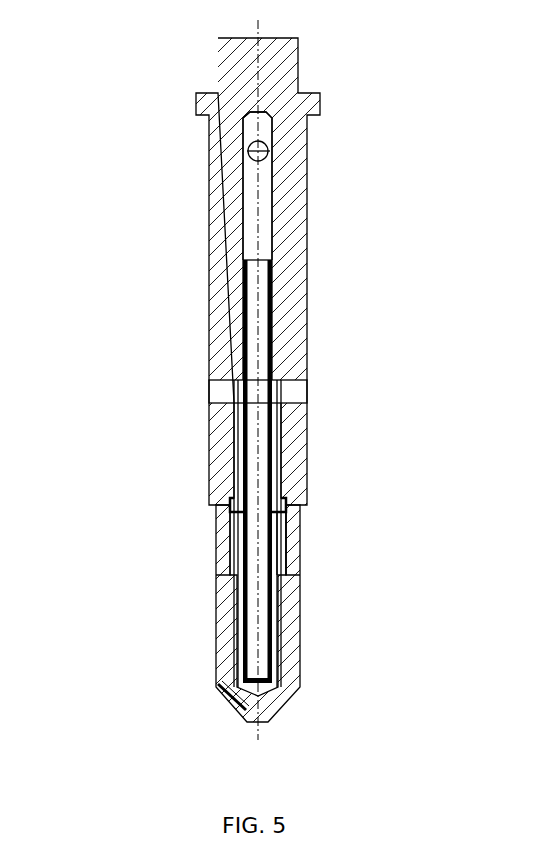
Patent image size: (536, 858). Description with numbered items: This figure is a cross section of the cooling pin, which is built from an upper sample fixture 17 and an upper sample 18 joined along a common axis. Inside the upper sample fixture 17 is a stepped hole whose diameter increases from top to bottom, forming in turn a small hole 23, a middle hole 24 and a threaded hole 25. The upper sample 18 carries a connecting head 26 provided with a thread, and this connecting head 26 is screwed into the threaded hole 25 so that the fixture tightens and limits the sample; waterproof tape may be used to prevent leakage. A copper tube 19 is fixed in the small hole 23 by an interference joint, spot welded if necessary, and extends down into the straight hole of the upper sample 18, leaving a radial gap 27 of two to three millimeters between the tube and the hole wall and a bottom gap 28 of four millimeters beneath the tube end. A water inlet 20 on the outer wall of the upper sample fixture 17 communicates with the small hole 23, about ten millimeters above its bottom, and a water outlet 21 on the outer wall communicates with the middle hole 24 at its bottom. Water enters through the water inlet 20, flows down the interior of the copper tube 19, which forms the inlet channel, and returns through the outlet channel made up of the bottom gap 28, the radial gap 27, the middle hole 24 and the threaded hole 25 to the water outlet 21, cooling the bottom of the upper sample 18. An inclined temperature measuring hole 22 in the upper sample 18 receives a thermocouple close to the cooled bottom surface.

The upper sample fixture 17 is at (268, 400).
The upper sample 18 is at (187, 554).
The copper tube 19 is at (179, 533).
The water inlet 20 is at (173, 145).
The water outlet 21 is at (192, 373).
The temperature measuring hole 22 is at (244, 708).
The small hole 23 is at (327, 186).
The middle hole 24 is at (328, 471).
The threaded hole 25 is at (321, 457).
The connecting head 26 is at (347, 517).
The radial gap 27 is at (343, 538).
The bottom gap 28 is at (268, 400).